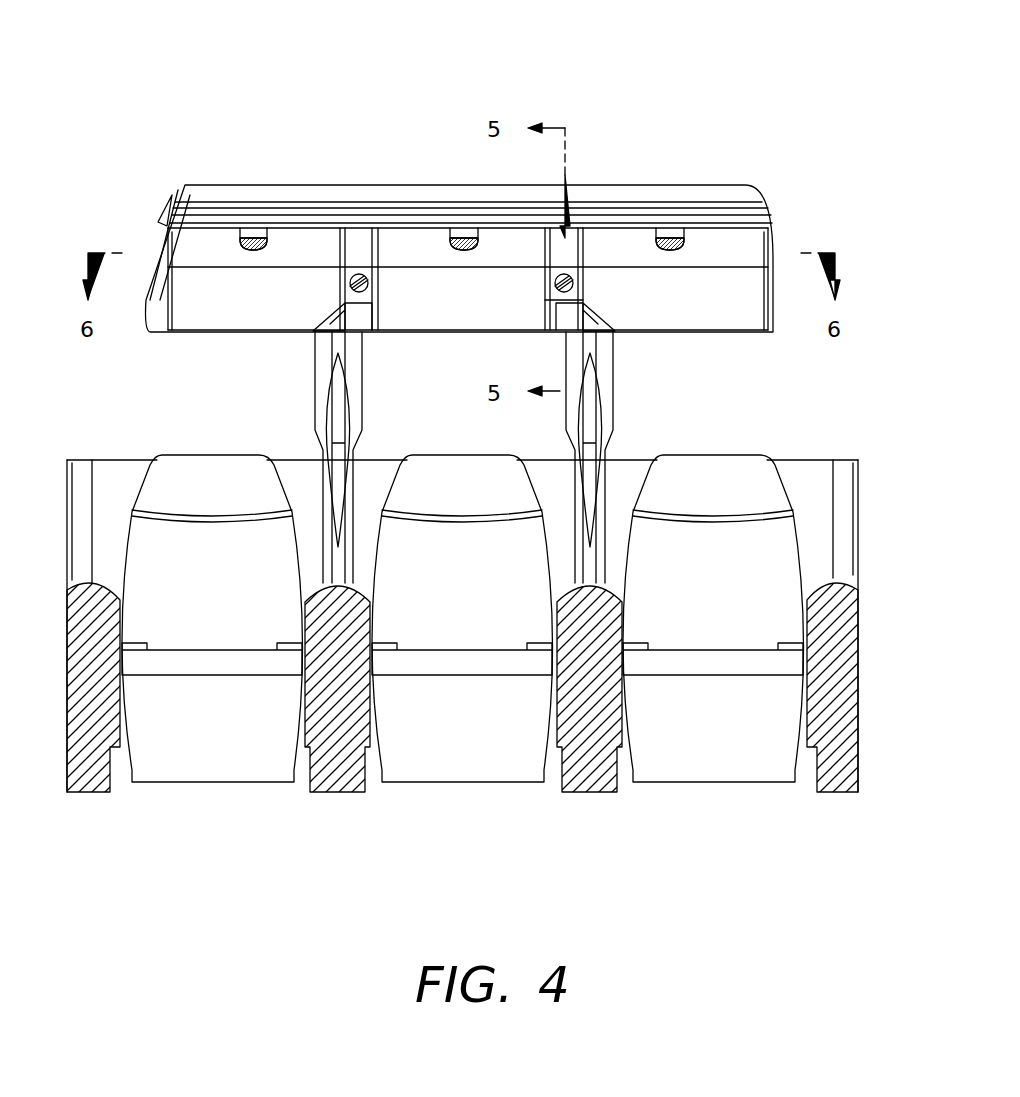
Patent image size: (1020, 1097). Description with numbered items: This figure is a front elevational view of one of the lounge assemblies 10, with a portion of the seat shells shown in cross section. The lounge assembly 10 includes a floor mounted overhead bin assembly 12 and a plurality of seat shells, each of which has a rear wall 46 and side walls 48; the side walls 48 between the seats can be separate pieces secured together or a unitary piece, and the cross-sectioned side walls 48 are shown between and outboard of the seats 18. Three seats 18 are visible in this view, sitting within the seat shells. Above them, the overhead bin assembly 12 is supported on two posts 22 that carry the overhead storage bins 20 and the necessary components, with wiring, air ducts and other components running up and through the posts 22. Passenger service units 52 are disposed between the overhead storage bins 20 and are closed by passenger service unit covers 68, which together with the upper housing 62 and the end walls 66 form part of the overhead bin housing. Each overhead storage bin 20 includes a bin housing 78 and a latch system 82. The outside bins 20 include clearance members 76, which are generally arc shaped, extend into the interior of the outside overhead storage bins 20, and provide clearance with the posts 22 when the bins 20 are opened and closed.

The lounge assembly 10 is at (285, 40).
The overhead bin assembly 12 is at (772, 42).
The seat 18 is at (205, 765).
The overhead storage bin 20 is at (250, 318).
The post 22 is at (330, 428).
The rear wall 46 is at (100, 478).
The side wall 48 is at (850, 690).
The passenger service unit 52 is at (376, 138).
The upper housing 62 is at (655, 188).
The end wall 66 is at (778, 232).
The passenger service unit cover 68 is at (560, 238).
The clearance member 76 is at (333, 336).
The bin housing 78 is at (190, 302).
The latch system 82 is at (253, 228).